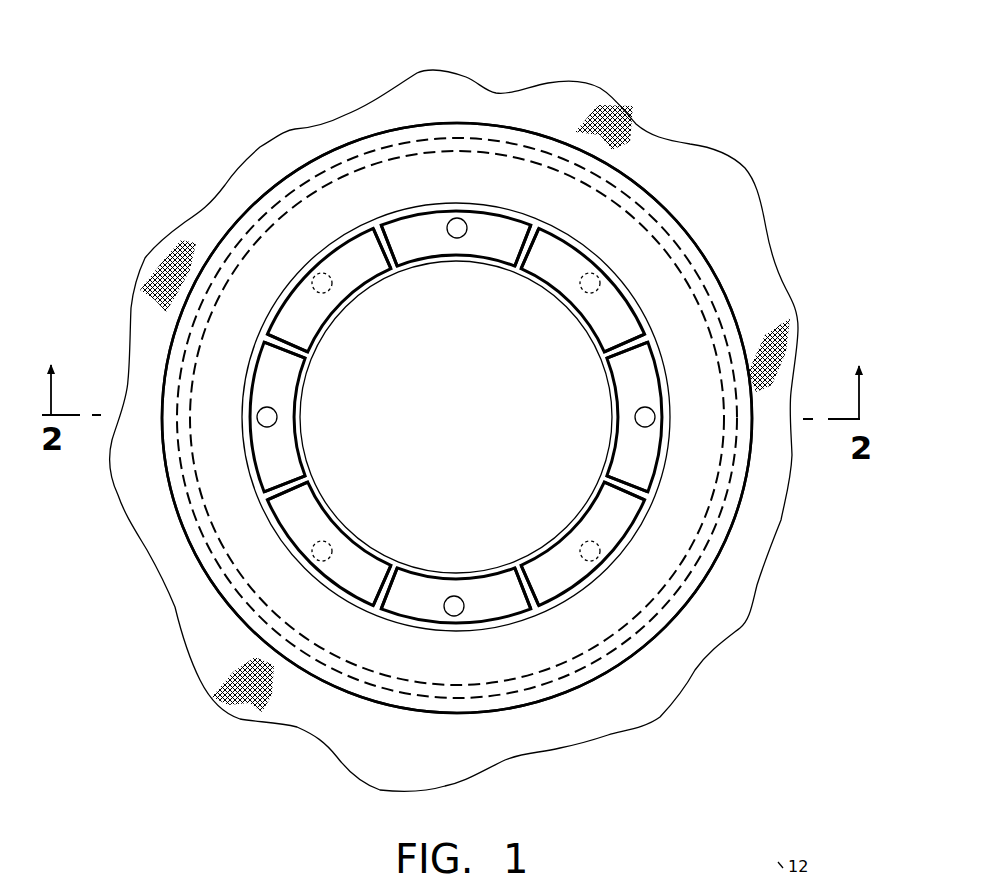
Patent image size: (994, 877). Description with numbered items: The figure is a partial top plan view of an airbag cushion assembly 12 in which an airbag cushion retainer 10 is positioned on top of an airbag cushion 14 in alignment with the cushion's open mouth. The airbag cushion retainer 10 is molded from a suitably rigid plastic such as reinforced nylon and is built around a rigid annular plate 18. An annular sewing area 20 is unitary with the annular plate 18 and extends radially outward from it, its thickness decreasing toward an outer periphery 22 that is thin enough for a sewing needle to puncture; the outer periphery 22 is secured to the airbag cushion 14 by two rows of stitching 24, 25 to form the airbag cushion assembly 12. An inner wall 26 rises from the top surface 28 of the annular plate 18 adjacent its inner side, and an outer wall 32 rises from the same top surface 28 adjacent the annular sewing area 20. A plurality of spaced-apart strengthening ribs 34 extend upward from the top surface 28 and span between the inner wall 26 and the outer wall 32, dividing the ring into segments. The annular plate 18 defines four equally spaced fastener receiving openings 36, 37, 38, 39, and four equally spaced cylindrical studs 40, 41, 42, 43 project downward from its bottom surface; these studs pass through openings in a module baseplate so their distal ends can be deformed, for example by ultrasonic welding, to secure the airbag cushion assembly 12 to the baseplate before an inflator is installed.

The airbag cushion retainer 10 is at (695, 600).
The airbag cushion assembly 12 is at (703, 74).
The airbag cushion 14 is at (553, 103).
The annular plate 18 is at (312, 505).
The annular sewing area 20 is at (668, 510).
The outer periphery 22 is at (720, 536).
The row of stitching 24 is at (537, 675).
The row of stitching 25 is at (603, 657).
The inner wall 26 is at (523, 568).
The top surface 28 is at (350, 572).
The outer wall 32 is at (548, 595).
The strengthening ribs 34 is at (393, 230).
The fastener receiving opening 36 is at (463, 222).
The fastener receiving opening 37 is at (654, 413).
The fastener receiving opening 38 is at (450, 612).
The fastener receiving opening 39 is at (258, 417).
The cylindrical stud 40 is at (600, 278).
The cylindrical stud 41 is at (600, 560).
The cylindrical stud 42 is at (310, 560).
The cylindrical stud 43 is at (312, 280).